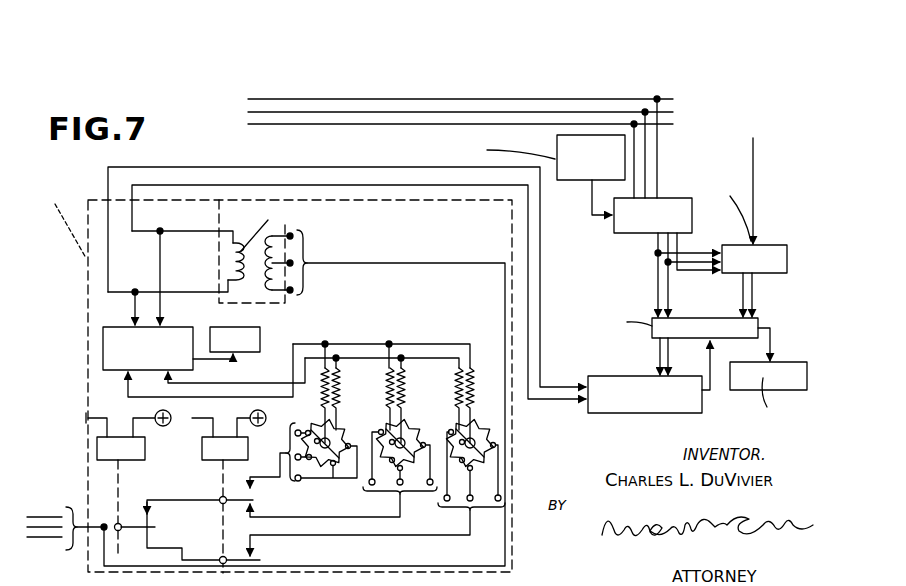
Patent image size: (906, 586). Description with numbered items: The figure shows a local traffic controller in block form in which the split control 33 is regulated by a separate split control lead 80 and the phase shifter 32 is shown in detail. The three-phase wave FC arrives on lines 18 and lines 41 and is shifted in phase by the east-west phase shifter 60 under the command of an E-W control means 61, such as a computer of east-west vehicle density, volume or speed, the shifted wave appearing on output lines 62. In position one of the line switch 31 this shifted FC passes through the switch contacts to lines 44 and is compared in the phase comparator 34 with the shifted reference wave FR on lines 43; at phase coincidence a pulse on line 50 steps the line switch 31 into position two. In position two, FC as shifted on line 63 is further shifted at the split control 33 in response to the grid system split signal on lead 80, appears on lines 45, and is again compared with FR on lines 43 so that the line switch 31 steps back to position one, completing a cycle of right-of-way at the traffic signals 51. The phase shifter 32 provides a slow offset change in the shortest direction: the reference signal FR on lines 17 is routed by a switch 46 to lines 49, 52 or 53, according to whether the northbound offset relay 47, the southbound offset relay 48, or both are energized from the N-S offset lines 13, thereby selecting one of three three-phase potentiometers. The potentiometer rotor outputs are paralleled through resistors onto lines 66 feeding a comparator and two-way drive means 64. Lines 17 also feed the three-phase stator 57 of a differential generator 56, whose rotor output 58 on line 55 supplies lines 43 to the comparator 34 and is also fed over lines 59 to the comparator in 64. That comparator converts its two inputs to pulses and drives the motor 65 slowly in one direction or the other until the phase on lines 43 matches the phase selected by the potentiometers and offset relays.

The N-S offset lines 13 is at (81, 418).
The lines carrying three-phase reference signal FR 17 is at (42, 507).
The lines carrying three-phase signal FC 18 is at (450, 79).
The line switch 31 is at (758, 318).
The phase shifter 32 is at (86, 275).
The split control 33 is at (737, 246).
The phase comparator 34 is at (615, 415).
The FC input lines 41 is at (659, 163).
The lines carrying shifted signal FR 43 is at (187, 233).
The line switch output lines 44 is at (656, 352).
The split-shifted FC lines 45 is at (759, 292).
The switch 46 is at (180, 530).
The northbound offset relay 47 is at (90, 450).
The southbound offset relay 48 is at (198, 450).
The average potentiometer lines 49 is at (279, 486).
The coincidence pulse line 50 is at (710, 390).
The right-of-way signal 51 is at (782, 392).
The northbound potentiometer lines 52 is at (333, 509).
The southbound potentiometer lines 53 is at (343, 539).
The rotor output line 55 is at (360, 270).
The differential generator 56 is at (218, 229).
The three-phase stator 57 is at (300, 226).
The rotor output 58 is at (245, 283).
The rotor feedback lines 59 is at (169, 306).
The east-west phase shifter 60 is at (692, 215).
The E-W control means 61 is at (556, 152).
The east-west phase shifter output lines 62 is at (650, 294).
The shifted FC lines to split control 63 is at (694, 278).
The comparator and two-way drive means 64 is at (100, 332).
The motor 65 is at (252, 340).
The potentiometer output lines 66 is at (270, 372).
The split control lead 80 is at (753, 217).